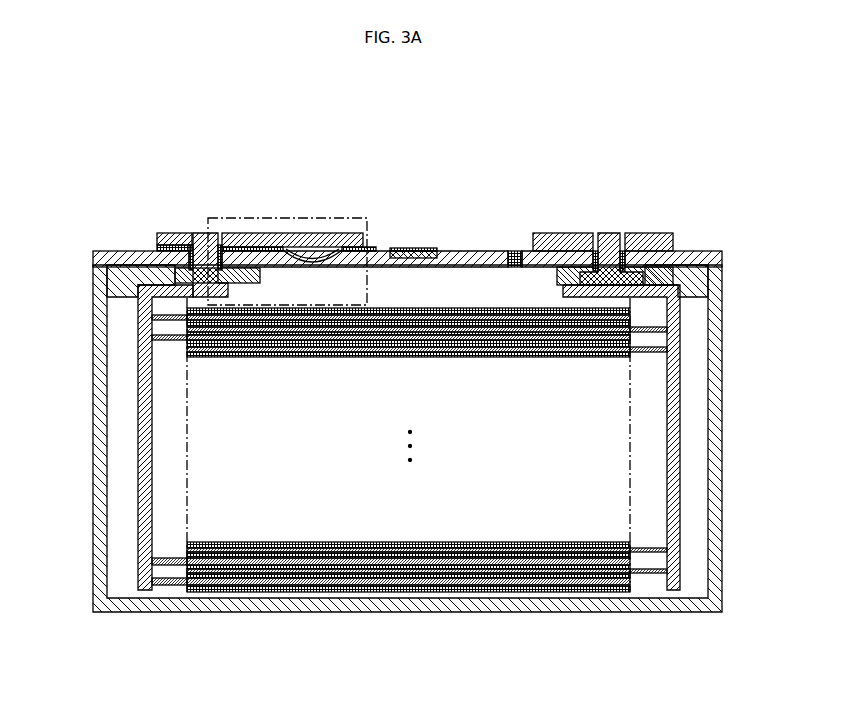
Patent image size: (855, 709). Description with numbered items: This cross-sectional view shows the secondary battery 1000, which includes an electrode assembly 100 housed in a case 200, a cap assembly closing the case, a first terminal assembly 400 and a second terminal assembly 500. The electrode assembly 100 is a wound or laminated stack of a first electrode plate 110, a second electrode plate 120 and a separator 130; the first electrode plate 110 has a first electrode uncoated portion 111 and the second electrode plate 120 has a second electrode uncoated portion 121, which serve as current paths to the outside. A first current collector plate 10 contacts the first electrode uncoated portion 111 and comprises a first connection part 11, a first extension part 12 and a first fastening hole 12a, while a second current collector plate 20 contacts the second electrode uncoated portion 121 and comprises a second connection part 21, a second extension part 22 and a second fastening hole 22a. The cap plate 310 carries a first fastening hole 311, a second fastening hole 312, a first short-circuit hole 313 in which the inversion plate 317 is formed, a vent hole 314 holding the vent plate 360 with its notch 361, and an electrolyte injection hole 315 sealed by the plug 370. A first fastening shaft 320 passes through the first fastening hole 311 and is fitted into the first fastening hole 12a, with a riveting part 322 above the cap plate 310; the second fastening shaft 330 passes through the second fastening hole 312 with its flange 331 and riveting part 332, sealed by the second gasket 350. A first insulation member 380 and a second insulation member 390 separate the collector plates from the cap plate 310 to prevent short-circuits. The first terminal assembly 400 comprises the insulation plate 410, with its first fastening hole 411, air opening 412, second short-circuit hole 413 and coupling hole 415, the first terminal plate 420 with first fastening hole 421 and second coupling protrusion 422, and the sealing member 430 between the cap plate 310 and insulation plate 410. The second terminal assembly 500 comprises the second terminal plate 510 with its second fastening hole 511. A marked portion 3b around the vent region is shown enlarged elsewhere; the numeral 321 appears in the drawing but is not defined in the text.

The secondary battery 1000 is at (799, 153).
The first current collector plate 10 is at (145, 388).
The first connection part 11 is at (125, 458).
The first extension part 12 is at (148, 262).
The first fastening hole 12a is at (196, 298).
The second current collector plate 20 is at (676, 388).
The second connection part 21 is at (690, 458).
The second extension part 22 is at (653, 255).
The second fastening hole 22a is at (622, 297).
The electrode assembly 100 is at (491, 600).
The first electrode plate 110 is at (292, 585).
The first electrode uncoated portion 111 is at (168, 590).
The second electrode plate 120 is at (558, 577).
The second electrode uncoated portion 121 is at (646, 578).
The separator 130 is at (422, 588).
The case 200 is at (716, 345).
The cap plate 310 is at (470, 258).
The first fastening hole 311 is at (186, 238).
The second fastening hole 312 is at (630, 246).
The first short-circuit hole 313 is at (337, 253).
The vent hole 314 is at (412, 260).
The electrolyte injection hole 315 is at (514, 265).
The inversion plate 317 is at (313, 264).
The first fastening shaft 320 is at (207, 234).
The first current collecting plate 321 is at (262, 280).
The riveting part 322 is at (224, 246).
The second fastening shaft 330 is at (609, 235).
The flange 331 is at (575, 283).
The riveting part 332 is at (596, 250).
The second gasket 350 is at (575, 248).
The vent plate 360 is at (395, 251).
The notch 361 is at (418, 253).
The plug 370 is at (514, 258).
The first insulation member 380 is at (108, 280).
The second insulation member 390 is at (690, 280).
The portion 3b is at (262, 218).
The first terminal assembly 400 is at (364, 203).
The insulation plate 410 is at (367, 240).
The first fastening hole 411 is at (229, 298).
The air opening 412 is at (268, 250).
The second short-circuit hole 413 is at (311, 247).
The coupling hole 415 is at (330, 257).
The first terminal plate 420 is at (172, 246).
The first fastening hole 421 is at (191, 250).
The second coupling protrusion 422 is at (158, 240).
The sealing member 430 is at (348, 264).
The second terminal assembly 500 is at (409, 482).
The second terminal plate 510 is at (608, 358).
The second fastening hole 511 is at (571, 355).